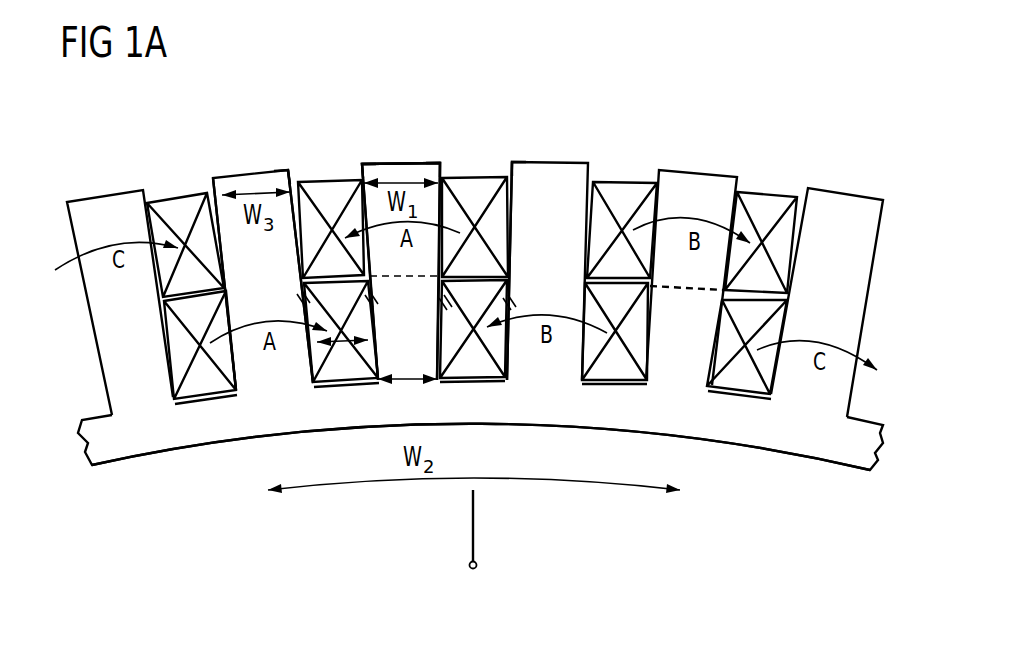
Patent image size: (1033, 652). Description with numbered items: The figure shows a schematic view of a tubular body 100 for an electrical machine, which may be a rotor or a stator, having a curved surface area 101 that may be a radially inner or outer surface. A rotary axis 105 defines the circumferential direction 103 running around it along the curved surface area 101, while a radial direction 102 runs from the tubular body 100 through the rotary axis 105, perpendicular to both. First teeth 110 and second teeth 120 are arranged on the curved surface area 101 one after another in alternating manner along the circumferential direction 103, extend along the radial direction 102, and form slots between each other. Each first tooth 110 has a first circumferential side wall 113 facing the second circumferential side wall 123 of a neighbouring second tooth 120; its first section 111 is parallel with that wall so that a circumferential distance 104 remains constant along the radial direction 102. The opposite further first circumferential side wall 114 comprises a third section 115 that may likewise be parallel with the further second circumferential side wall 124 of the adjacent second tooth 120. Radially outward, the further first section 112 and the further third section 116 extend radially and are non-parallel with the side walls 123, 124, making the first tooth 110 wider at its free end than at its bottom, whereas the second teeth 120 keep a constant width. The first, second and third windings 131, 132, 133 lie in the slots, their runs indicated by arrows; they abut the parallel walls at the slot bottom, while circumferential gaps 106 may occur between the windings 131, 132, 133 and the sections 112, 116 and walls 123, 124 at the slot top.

The tubular body 100 is at (743, 72).
The curved surface area 101 is at (102, 412).
The radial direction 102 is at (475, 530).
The circumferential direction 103 is at (590, 487).
The circumferential distance 104 is at (340, 340).
The rotary axis 105 is at (478, 567).
The circumferential gap 106 is at (215, 195).
The first tooth 110 is at (107, 205).
The first section 111 is at (370, 293).
The further first section 112 is at (370, 257).
The first circumferential side wall 113 is at (355, 173).
The further first circumferential side wall 114 is at (450, 165).
The third section 115 is at (438, 352).
The further third section 116 is at (423, 187).
The second tooth 120 is at (250, 182).
The second circumferential side wall 123 is at (297, 172).
The further second circumferential side wall 124 is at (490, 165).
The first winding 131 is at (332, 187).
The second winding 132 is at (625, 190).
The third winding 133 is at (180, 207).